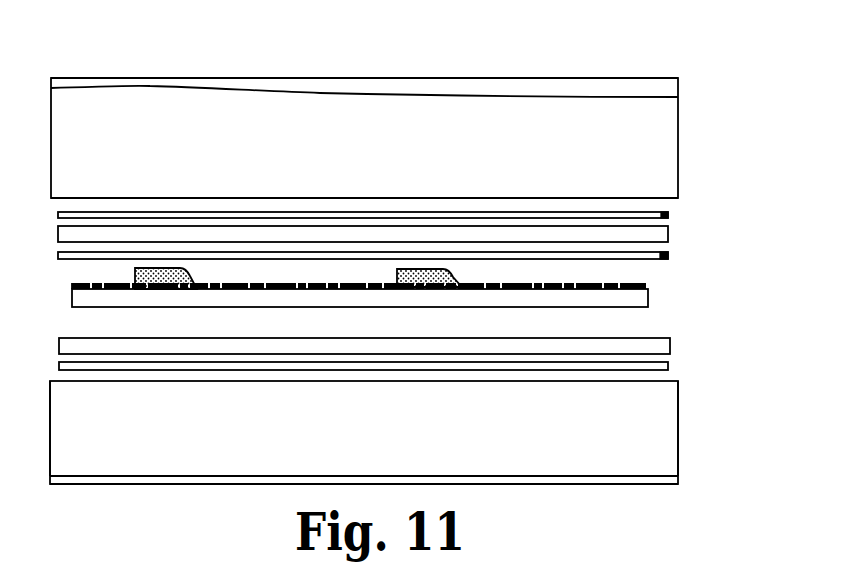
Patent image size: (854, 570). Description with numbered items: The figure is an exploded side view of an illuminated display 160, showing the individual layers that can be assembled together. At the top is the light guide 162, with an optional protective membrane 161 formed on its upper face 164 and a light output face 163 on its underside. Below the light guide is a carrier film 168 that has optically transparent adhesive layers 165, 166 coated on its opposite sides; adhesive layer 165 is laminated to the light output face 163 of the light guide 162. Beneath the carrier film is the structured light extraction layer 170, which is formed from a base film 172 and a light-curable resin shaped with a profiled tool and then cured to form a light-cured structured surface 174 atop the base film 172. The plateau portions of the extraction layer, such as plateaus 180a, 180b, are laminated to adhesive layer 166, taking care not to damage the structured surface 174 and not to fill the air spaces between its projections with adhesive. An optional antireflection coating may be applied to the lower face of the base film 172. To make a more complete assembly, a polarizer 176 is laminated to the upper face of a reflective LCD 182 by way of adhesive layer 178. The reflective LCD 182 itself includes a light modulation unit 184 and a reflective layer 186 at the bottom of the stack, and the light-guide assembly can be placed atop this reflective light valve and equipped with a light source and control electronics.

The illuminated display 160 is at (534, 58).
The protective membrane 161 is at (661, 91).
The light guide 162 is at (657, 159).
The light output face 163 is at (542, 196).
The upper face 164 is at (625, 99).
The adhesive layer 165 is at (670, 214).
The adhesive layer 166 is at (668, 256).
The carrier film 168 is at (653, 234).
The structured light extraction layer 170 is at (630, 288).
The base film 172 is at (632, 300).
The structured surface 174 is at (648, 290).
The polarizer 176 is at (655, 347).
The adhesive layer 178 is at (665, 369).
The plateau 180a is at (180, 277).
The plateau 180b is at (448, 279).
The reflective LCD 182 is at (672, 401).
The light modulation unit 184 is at (663, 430).
The reflective layer 186 is at (665, 481).